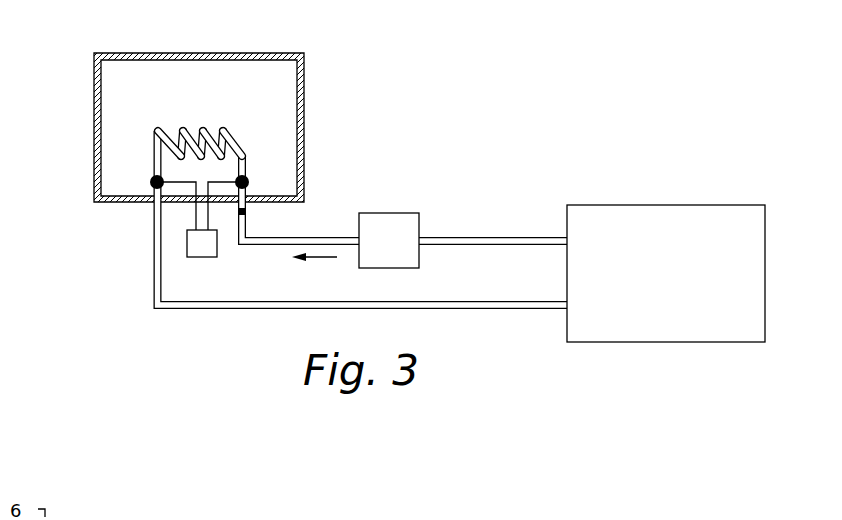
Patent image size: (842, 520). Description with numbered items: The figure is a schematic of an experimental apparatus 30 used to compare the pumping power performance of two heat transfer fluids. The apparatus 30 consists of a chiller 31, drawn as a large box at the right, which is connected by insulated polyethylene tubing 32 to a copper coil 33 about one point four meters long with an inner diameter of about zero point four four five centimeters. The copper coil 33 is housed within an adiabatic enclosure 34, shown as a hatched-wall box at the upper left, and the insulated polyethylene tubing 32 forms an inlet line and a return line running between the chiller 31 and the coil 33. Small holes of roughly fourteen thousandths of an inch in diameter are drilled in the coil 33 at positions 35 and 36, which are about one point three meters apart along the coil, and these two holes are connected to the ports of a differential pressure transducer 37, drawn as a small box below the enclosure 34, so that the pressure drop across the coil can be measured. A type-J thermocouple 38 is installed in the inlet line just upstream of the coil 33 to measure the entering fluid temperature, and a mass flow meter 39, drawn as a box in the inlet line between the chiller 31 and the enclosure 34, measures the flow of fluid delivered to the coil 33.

The apparatus 30 is at (468, 59).
The chiller 31 is at (655, 205).
The insulated polyethylene tubing 32 is at (462, 302).
The copper coil 33 is at (156, 127).
The adiabatic enclosure 34 is at (94, 108).
The hole position 35 is at (153, 178).
The hole position 36 is at (246, 178).
The differential pressure transducer 37 is at (205, 257).
The thermocouple 38 is at (246, 212).
The mass flow meter 39 is at (393, 213).